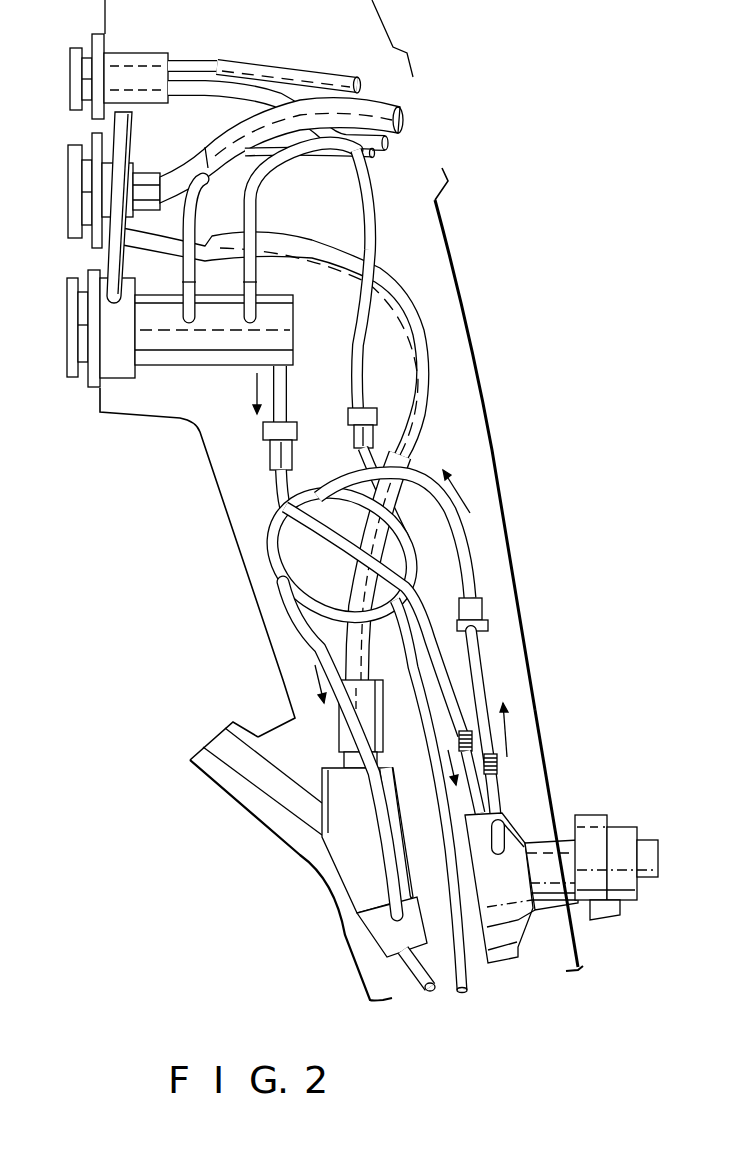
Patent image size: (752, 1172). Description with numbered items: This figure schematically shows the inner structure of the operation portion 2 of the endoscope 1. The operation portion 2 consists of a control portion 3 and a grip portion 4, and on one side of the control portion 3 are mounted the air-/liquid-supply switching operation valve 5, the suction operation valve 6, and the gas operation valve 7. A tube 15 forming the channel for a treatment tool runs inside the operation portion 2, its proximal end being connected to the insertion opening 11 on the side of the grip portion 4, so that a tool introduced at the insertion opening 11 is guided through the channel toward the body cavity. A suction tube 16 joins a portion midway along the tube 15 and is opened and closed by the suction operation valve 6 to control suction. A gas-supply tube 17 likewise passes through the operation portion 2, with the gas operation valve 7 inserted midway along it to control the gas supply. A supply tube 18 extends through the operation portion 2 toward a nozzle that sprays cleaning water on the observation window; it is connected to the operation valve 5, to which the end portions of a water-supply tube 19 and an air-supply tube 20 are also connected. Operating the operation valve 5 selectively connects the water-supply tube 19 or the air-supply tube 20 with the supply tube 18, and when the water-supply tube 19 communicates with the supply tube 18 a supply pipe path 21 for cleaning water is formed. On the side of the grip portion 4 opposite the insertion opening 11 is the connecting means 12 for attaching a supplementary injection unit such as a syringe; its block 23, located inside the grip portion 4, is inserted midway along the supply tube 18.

The endoscope 1 is at (502, 448).
The operation portion 2 is at (533, 620).
The control portion 3 is at (463, 302).
The grip portion 4 is at (242, 562).
The air-/liquid-supply switching operation valve 5 is at (115, 327).
The suction operation valve 6 is at (92, 189).
The gas operation valve 7 is at (118, 72).
The insertion opening 11 is at (215, 770).
The connecting means 12 is at (612, 905).
The tube 15 is at (413, 973).
The suction tube 16 is at (300, 108).
The gas-supply tube 17 is at (233, 60).
The supply tube 18 is at (277, 487).
The water-supply tube 19 is at (192, 222).
The air-supply tube 20 is at (250, 223).
The supply pipe path 21 is at (280, 498).
The block 23 is at (503, 940).